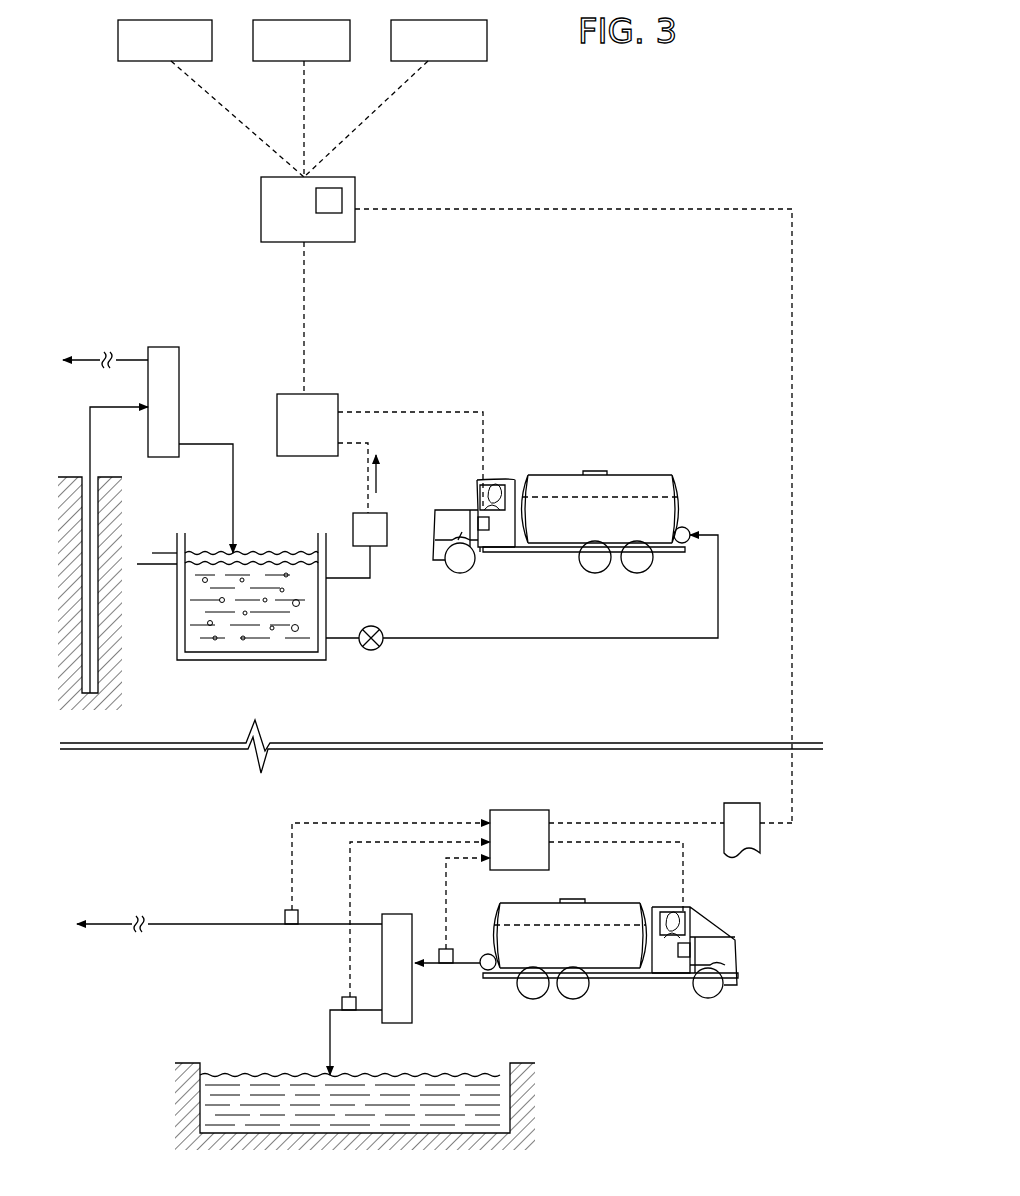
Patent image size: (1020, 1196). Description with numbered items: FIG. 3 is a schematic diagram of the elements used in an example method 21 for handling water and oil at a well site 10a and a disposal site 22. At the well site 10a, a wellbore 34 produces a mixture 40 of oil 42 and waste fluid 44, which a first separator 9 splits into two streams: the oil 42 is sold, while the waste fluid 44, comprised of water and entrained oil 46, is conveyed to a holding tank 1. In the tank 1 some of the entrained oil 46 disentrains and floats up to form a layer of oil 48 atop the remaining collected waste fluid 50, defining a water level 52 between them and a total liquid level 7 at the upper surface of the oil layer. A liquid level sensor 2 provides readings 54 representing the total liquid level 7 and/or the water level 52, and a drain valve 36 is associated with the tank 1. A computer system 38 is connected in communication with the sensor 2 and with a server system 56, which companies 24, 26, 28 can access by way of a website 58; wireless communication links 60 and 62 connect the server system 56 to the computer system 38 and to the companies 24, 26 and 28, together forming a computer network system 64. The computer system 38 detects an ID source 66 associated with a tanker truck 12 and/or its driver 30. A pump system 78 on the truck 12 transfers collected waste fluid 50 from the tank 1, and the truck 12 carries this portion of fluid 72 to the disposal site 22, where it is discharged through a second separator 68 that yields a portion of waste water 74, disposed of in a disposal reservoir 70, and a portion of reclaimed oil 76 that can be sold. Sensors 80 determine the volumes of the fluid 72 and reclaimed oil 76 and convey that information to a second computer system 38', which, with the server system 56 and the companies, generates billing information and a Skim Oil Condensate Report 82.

The holding tank 1 is at (177, 606).
The liquid level sensor 2 is at (387, 525).
The total liquid level 7 is at (160, 553).
The first separator 9 is at (165, 347).
The well site 10a is at (583, 695).
The tanker truck 12 is at (568, 475).
The method 21 is at (700, 145).
The disposal site 22 is at (185, 845).
The well company 24 is at (132, 61).
The trucking company 26 is at (316, 61).
The disposal company 28 is at (461, 61).
The driver 30 is at (497, 487).
The wellbore 34 is at (77, 477).
The drain valve 36 is at (375, 652).
The computer system 38 is at (328, 408).
The second computer system 38' is at (542, 883).
The mixture 40 is at (121, 408).
The oil 42 is at (129, 358).
The waste fluid 44 is at (233, 522).
The entrained oil 46 is at (295, 625).
The layer of oil 48 is at (305, 560).
The collected waste fluid 50 is at (190, 628).
The water level 52 is at (140, 562).
The readings 54 is at (378, 470).
The server system 56 is at (261, 199).
The website 58 is at (342, 197).
The wireless communication link 60 is at (306, 316).
The wireless communication links 62 is at (302, 137).
The computer network system 64 is at (275, 327).
The ID source 66 is at (489, 523).
The second separator 68 is at (396, 914).
The disposal reservoir 70 is at (510, 1068).
The portion of fluid 72 is at (637, 497).
The portion of waste water 74 is at (328, 1055).
The portion of reclaimed oil 76 is at (103, 922).
The pump system 78 is at (683, 526).
The sensors 80 is at (285, 917).
The Skim Oil Condensate Report 82 is at (735, 803).